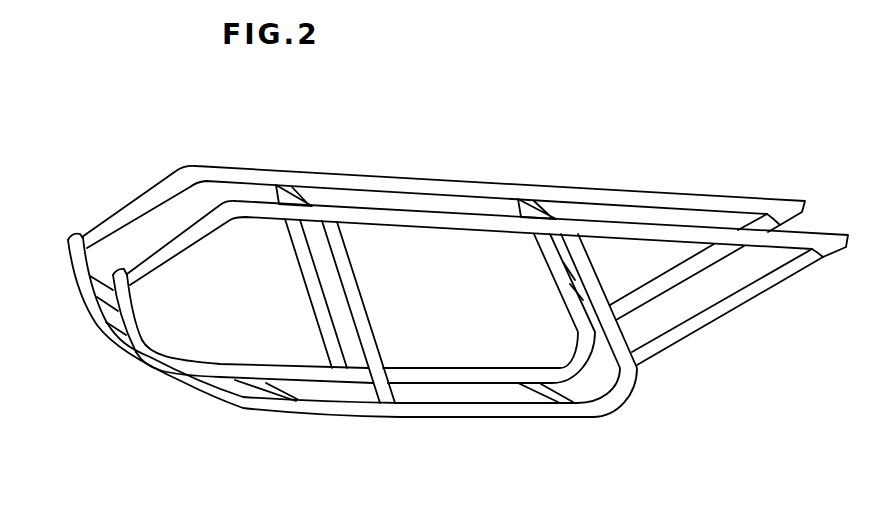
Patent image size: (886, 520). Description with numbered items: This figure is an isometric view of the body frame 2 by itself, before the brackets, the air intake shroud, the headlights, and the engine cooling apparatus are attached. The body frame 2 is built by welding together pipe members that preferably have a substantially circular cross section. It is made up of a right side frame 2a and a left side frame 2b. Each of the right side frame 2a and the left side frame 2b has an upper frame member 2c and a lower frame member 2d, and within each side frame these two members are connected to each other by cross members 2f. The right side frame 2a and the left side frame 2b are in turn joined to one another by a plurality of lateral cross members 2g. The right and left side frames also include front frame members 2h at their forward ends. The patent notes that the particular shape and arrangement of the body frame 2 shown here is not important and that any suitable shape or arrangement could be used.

The body frame 2 is at (178, 132).
The right side frame 2a is at (415, 184).
The left side frame 2b is at (427, 411).
The upper frame member 2c is at (341, 181).
The lower frame member 2d is at (413, 376).
The cross members 2f is at (300, 260).
The lateral cross members 2g is at (288, 186).
The front frame members 2h is at (77, 265).